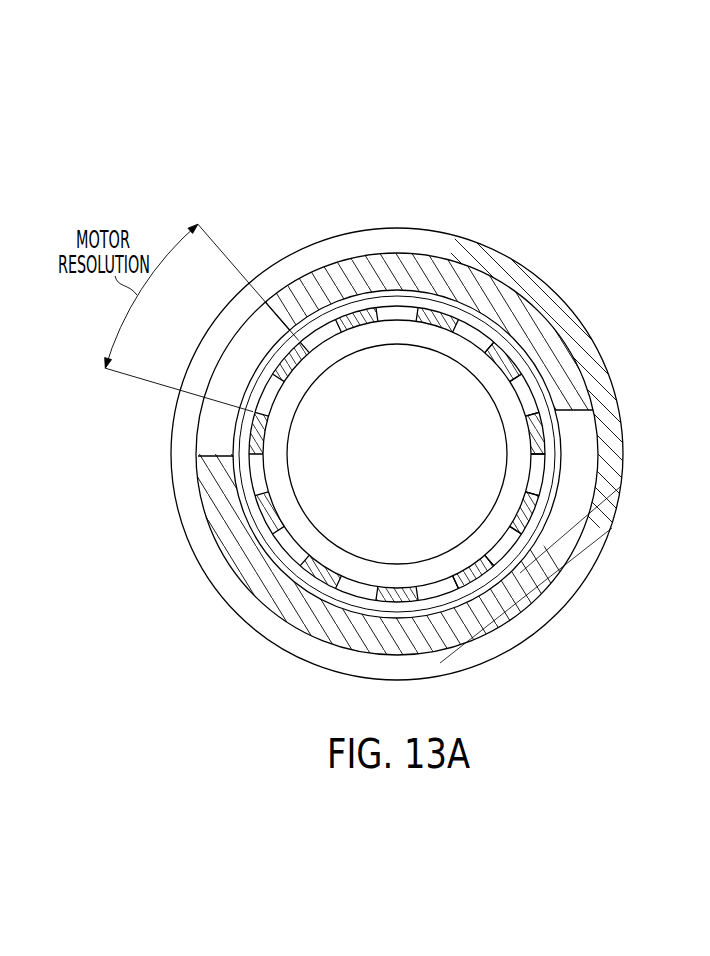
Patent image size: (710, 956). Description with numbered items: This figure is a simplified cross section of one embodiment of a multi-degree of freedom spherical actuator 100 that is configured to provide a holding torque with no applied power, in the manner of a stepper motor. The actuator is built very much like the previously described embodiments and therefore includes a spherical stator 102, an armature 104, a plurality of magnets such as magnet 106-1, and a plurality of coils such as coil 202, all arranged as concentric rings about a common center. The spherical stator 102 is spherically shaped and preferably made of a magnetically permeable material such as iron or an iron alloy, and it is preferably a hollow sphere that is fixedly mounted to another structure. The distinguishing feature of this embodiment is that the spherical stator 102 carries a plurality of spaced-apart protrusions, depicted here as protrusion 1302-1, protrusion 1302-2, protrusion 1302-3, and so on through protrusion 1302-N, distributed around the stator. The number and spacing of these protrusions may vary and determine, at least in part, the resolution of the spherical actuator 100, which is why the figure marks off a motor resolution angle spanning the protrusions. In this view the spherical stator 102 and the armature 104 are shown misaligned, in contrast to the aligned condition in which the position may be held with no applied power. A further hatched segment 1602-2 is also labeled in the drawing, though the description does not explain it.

The multi-degree of freedom spherical actuator 100 is at (541, 213).
The spherical stator 102 is at (520, 438).
The armature 104 is at (552, 288).
The magnet 106-1 is at (440, 273).
The coil 202 is at (356, 298).
The protrusion 1302-N is at (510, 367).
The protrusion 1302-1 is at (538, 445).
The protrusion 1302-2 is at (527, 508).
The protrusion 1302-3 is at (478, 570).
The stator segment 1602-2 is at (308, 622).